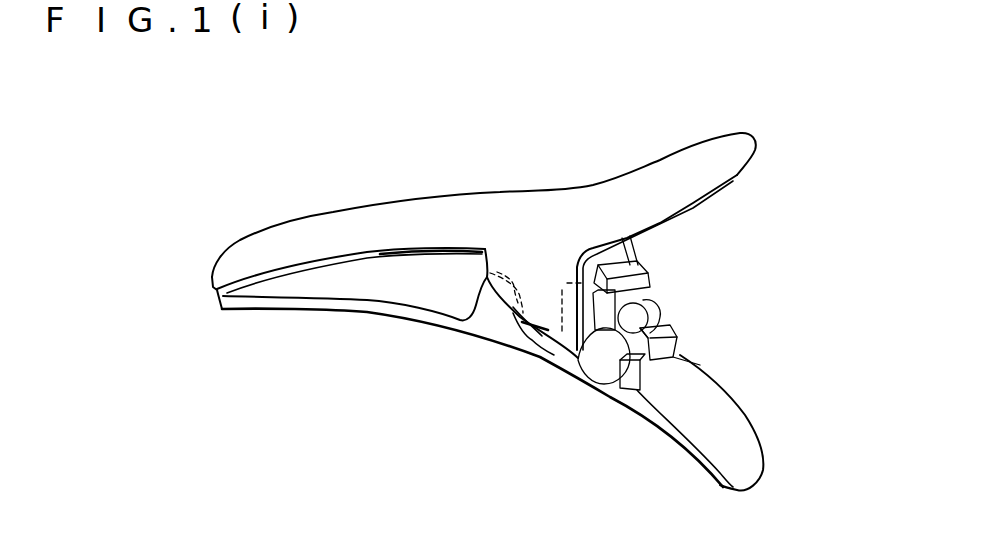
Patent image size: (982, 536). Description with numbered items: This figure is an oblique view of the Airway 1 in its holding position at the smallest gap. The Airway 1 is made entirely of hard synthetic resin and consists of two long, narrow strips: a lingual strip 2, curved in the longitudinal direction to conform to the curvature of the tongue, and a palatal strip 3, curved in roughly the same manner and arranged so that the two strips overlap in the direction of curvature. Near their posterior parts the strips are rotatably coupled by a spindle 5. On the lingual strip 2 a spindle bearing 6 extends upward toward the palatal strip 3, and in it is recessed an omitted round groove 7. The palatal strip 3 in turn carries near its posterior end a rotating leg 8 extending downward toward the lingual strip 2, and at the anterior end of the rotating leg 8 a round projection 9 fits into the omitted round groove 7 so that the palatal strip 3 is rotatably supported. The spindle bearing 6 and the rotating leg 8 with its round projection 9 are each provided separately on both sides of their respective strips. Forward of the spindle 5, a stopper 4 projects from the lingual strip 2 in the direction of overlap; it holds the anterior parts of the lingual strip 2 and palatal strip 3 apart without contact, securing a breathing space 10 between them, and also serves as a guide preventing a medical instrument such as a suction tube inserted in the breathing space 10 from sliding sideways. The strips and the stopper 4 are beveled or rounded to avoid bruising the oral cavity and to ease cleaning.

The Airway 1 is at (803, 168).
The lingual strip 2 is at (357, 281).
The palatal strip 3 is at (386, 223).
The stopper 4 is at (493, 310).
The spindle 5 is at (580, 365).
The spindle bearing 6 is at (557, 367).
The omitted round groove 7 is at (613, 383).
The rotating leg 8 is at (543, 301).
The round projection 9 is at (637, 375).
The breathing space 10 is at (620, 293).